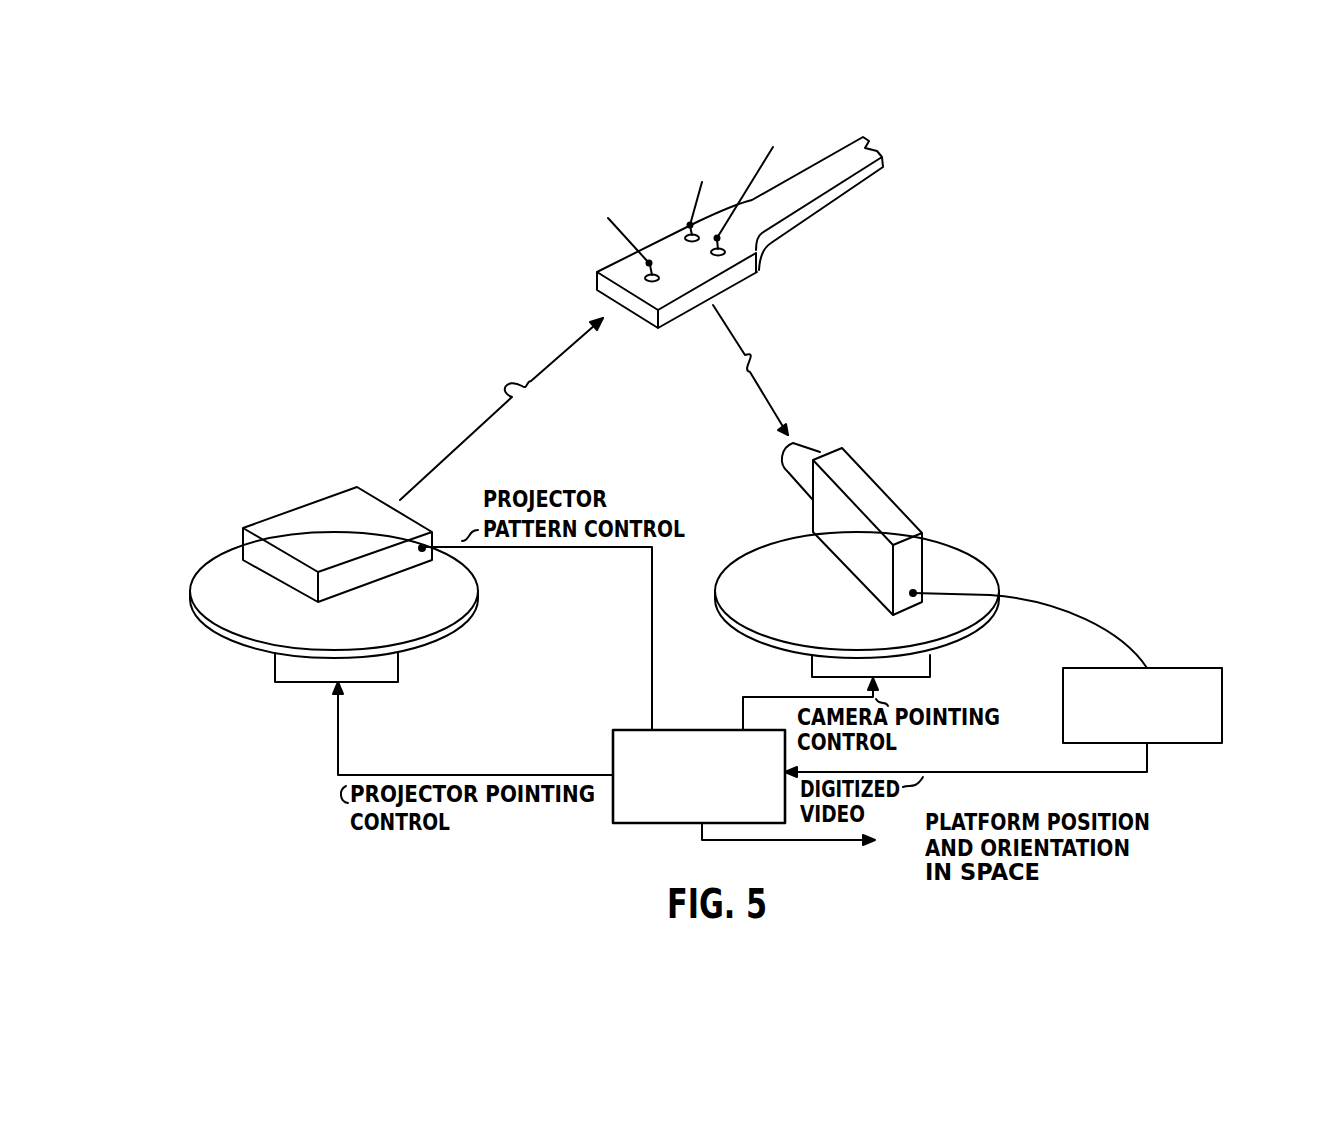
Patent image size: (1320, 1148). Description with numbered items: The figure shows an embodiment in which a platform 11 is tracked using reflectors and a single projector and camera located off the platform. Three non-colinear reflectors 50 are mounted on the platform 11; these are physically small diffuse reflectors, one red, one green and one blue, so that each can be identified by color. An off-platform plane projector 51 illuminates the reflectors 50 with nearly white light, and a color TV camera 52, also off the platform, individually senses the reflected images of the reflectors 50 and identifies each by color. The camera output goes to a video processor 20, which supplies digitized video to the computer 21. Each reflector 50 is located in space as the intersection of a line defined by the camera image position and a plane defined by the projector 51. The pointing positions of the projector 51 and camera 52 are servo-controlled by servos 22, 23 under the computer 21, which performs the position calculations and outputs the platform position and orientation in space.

The platform 11 is at (597, 285).
The reflectors 50 is at (712, 255).
The plane projector 51 is at (292, 518).
The servo 22 is at (238, 623).
The color TV camera 52 is at (863, 487).
The servo 23 is at (968, 567).
The video processor 20 is at (1222, 718).
The computer 21 is at (637, 815).